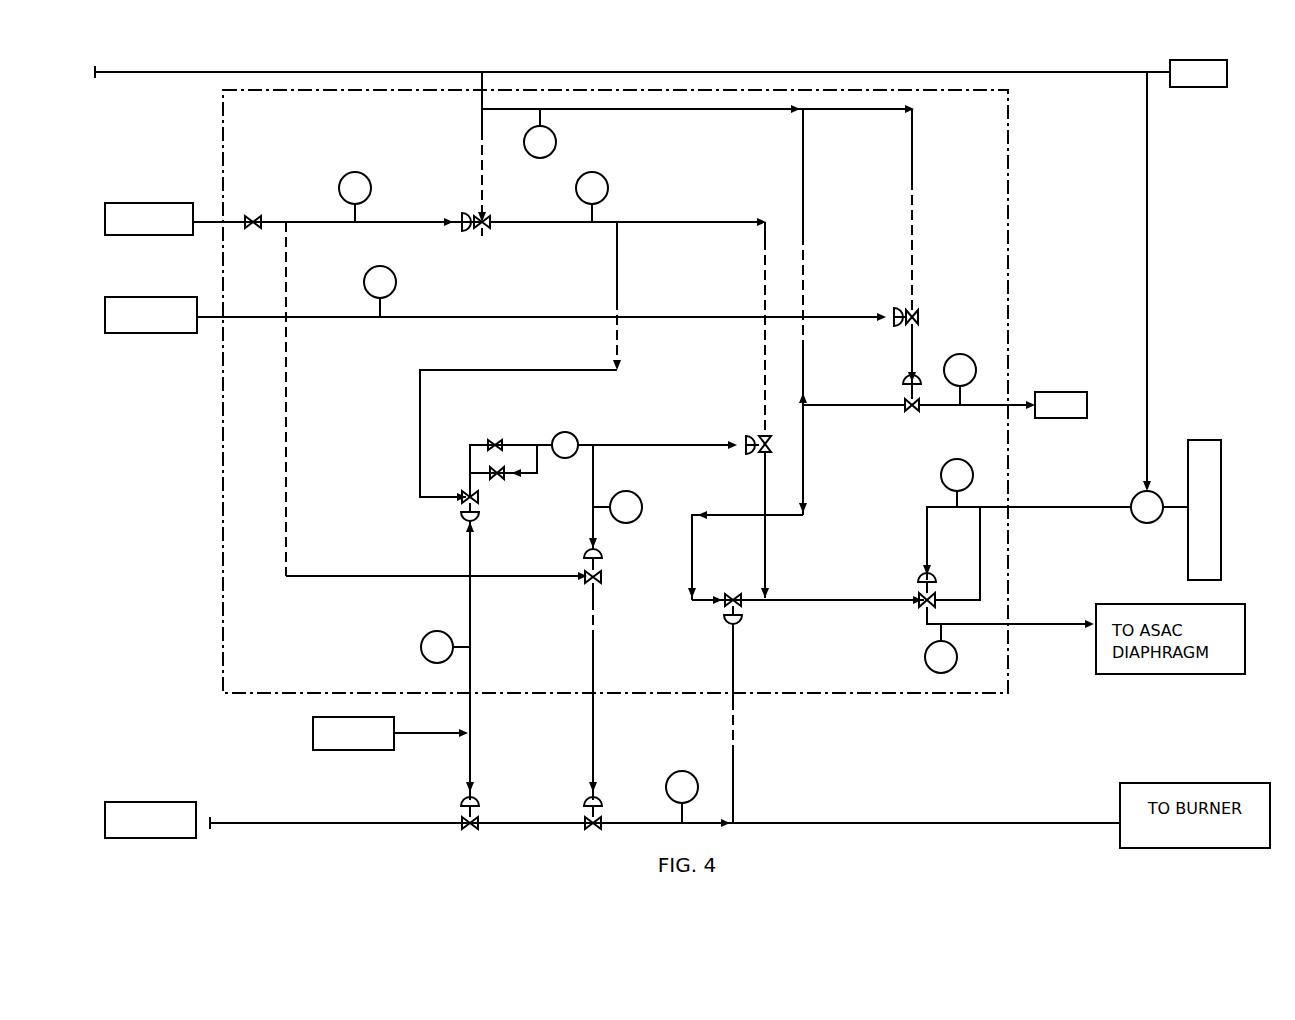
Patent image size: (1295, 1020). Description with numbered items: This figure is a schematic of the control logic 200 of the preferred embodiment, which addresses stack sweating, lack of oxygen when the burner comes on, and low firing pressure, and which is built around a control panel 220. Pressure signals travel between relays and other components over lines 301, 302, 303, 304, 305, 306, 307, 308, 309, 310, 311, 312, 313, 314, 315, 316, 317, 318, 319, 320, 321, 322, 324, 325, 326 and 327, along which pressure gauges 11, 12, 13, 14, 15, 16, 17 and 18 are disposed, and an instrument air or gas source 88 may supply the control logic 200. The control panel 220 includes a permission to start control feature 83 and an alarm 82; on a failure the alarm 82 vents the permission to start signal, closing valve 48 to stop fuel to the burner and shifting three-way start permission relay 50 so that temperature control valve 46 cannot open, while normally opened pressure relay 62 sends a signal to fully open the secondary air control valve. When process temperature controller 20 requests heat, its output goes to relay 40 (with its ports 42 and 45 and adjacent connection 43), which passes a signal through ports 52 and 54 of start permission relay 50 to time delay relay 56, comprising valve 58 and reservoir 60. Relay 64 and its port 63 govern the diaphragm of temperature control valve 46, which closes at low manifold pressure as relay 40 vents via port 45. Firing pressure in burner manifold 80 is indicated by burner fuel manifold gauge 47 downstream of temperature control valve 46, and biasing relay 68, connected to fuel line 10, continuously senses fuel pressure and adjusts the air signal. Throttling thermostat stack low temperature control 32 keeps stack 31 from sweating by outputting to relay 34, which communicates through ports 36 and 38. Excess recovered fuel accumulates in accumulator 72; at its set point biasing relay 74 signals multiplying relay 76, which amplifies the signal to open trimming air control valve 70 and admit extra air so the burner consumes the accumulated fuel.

The control logic 200 is at (508, 52).
The line 301 is at (893, 72).
The instrument air or gas source 88 is at (1198, 73).
The control panel 220 is at (1008, 108).
The line 309 is at (478, 98).
The pressure gauge 12 is at (540, 133).
The line 312 is at (828, 112).
The line 314 is at (913, 192).
The line 302 is at (1146, 240).
The line 313 is at (805, 242).
The process temperature controller 20 is at (149, 219).
The line 306 is at (288, 220).
The pressure gauge 11 is at (355, 197).
The port 42 is at (478, 214).
The relay 40 is at (456, 228).
The valve port 43 is at (492, 226).
The port 45 is at (484, 232).
The pressure gauge 13 is at (592, 197).
The line 311 is at (704, 222).
The line 310 is at (619, 262).
The accumulator 72 is at (151, 315).
The pressure gauge 17 is at (380, 291).
The line 308 is at (545, 317).
The biasing relay 74 is at (892, 310).
The line 307 is at (287, 396).
The multiplying relay 76 is at (902, 386).
The pressure gauge 18 is at (960, 379).
The line 316 is at (838, 408).
The line 315 is at (990, 408).
The trimming air control valve 70 is at (1061, 405).
The time delay relay 56 is at (470, 403).
The valve 58 is at (490, 438).
The line 324 is at (466, 452).
The reservoir 60 is at (565, 445).
The line 325 is at (540, 454).
The line 326 is at (482, 480).
The port 54 is at (464, 496).
The port 52 is at (466, 506).
The start permission relay 50 is at (480, 524).
The line 322 is at (472, 600).
The alarm 82 is at (445, 647).
The permission to start control feature 83 is at (390, 733).
The valve 48 is at (483, 803).
The line 319 is at (626, 444).
The normally opened pressure relay 62 is at (744, 454).
The line 318 is at (767, 538).
The line 320 is at (594, 488).
The pressure gauge 14 is at (617, 507).
The relay 64 is at (604, 554).
The port 63 is at (602, 580).
The line 321 is at (590, 648).
The temperature control valve 46 is at (598, 812).
The line 317 is at (778, 602).
The biasing relay 68 is at (747, 622).
The line 327 is at (734, 674).
The burner fuel manifold gauge 47 is at (682, 797).
The relay 34 is at (914, 580).
The port 36 is at (934, 602).
The port 38 is at (926, 608).
The line 303 is at (1046, 506).
The pressure gauge 16 is at (957, 483).
The line 304 is at (982, 550).
The throttling thermostat stack low temperature control 32 is at (1159, 507).
The stack 31 is at (1204, 510).
The line 305 is at (1062, 628).
The pressure gauge 15 is at (941, 648).
The burner manifold 80 is at (150, 820).
The line 10 is at (342, 822).